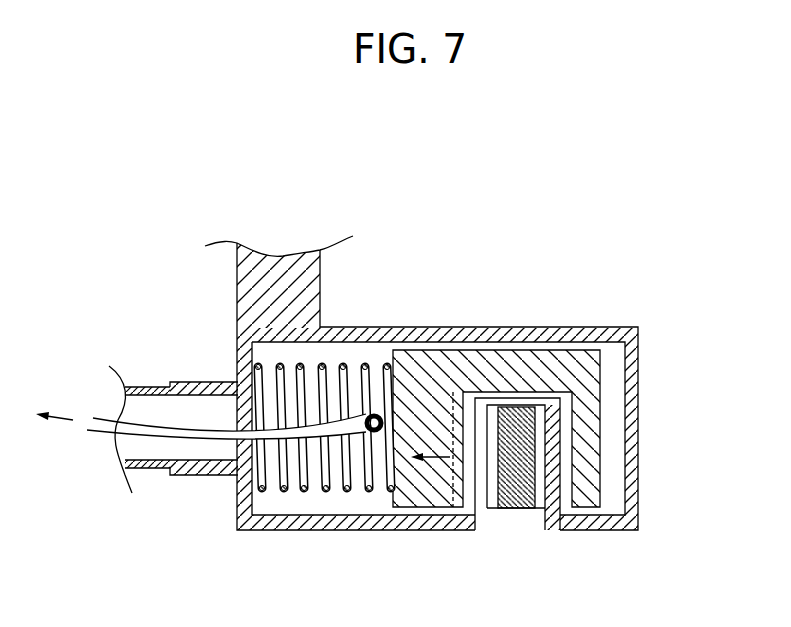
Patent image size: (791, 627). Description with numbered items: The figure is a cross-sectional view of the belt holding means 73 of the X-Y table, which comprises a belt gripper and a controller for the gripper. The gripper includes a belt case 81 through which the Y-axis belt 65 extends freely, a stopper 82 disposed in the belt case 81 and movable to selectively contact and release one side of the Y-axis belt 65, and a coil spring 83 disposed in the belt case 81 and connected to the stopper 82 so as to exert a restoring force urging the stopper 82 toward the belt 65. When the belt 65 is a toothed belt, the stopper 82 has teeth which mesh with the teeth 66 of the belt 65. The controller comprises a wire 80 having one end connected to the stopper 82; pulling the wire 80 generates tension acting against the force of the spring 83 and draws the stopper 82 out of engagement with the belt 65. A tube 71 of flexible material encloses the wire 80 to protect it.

The belt holding means 73 is at (604, 275).
The belt case 81 is at (320, 289).
The stopper 82 is at (510, 355).
The coil spring 83 is at (317, 495).
The wire 80 is at (160, 427).
The tube 71 is at (152, 462).
The teeth 66 is at (485, 507).
The Y-axis belt 65 is at (518, 503).